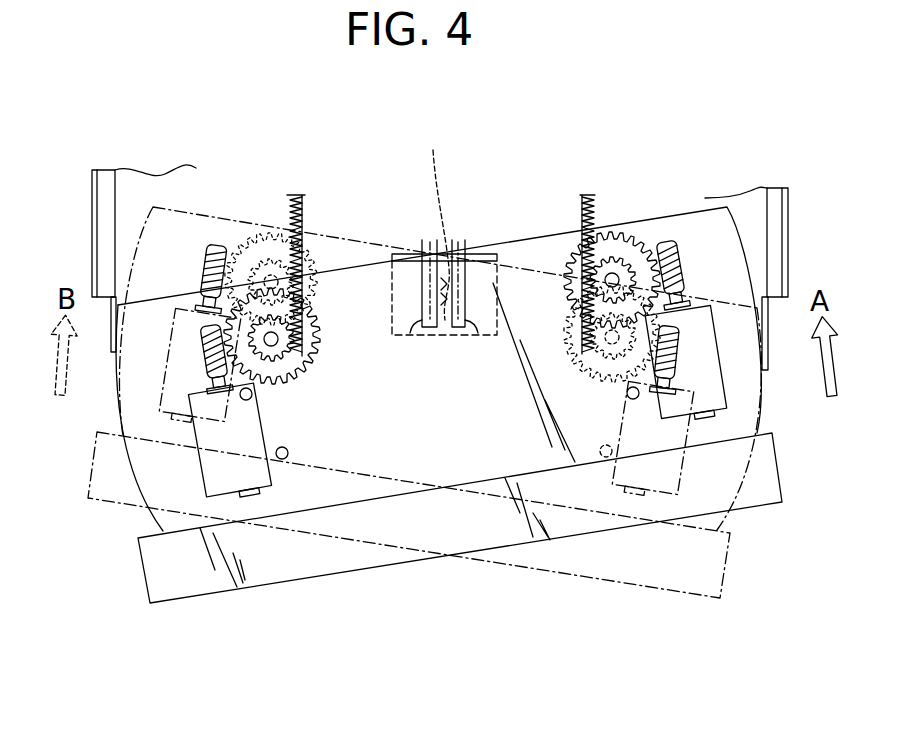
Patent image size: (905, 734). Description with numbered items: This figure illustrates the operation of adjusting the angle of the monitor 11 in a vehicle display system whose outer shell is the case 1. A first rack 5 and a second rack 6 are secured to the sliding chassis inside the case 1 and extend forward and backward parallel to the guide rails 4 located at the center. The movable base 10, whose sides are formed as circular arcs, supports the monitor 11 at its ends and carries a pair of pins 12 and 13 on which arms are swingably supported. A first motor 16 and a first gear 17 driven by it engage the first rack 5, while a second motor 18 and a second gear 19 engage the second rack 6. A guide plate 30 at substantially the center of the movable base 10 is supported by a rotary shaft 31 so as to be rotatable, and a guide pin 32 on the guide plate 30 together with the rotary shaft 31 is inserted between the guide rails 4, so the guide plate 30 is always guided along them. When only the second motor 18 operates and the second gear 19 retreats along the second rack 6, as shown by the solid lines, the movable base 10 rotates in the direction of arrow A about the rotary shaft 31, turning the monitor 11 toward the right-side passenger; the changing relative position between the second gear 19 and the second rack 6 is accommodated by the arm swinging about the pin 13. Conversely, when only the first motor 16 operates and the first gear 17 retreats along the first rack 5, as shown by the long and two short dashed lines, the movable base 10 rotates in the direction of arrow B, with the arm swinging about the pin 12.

The case 1 is at (92, 209).
The guide rails 4 is at (421, 336).
The first rack 5 is at (290, 197).
The second rack 6 is at (581, 211).
The movable base 10 is at (515, 234).
The monitor 11 is at (187, 578).
The pin 12 is at (290, 451).
The pin 13 is at (627, 394).
The first motor 16 is at (260, 416).
The first gear 17 is at (305, 360).
The second motor 18 is at (703, 377).
The second gear 19 is at (627, 252).
The guide plate 30 is at (397, 253).
The rotary shaft 31 is at (446, 333).
The guide pin 32 is at (433, 221).